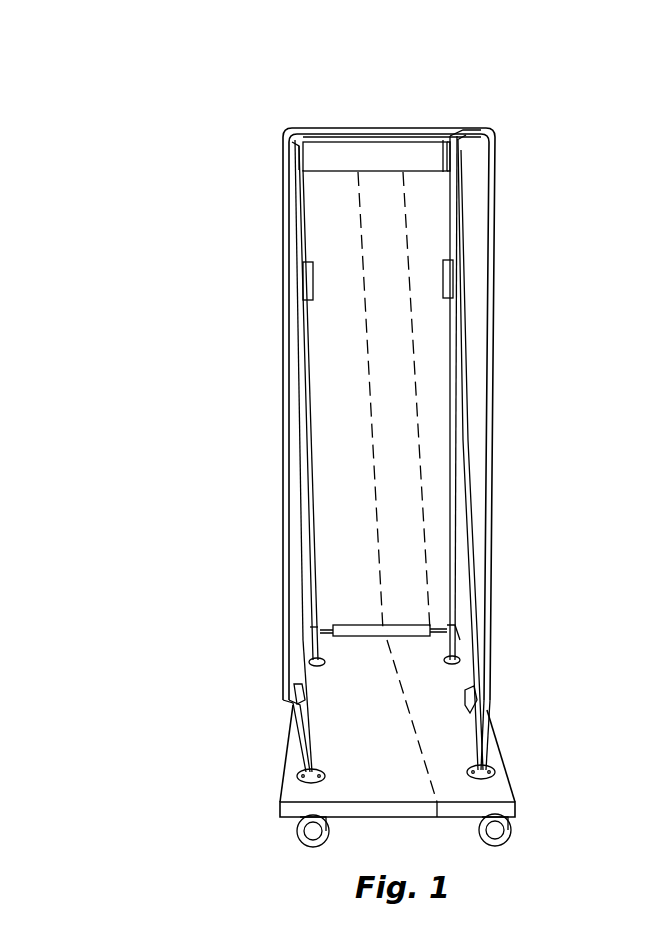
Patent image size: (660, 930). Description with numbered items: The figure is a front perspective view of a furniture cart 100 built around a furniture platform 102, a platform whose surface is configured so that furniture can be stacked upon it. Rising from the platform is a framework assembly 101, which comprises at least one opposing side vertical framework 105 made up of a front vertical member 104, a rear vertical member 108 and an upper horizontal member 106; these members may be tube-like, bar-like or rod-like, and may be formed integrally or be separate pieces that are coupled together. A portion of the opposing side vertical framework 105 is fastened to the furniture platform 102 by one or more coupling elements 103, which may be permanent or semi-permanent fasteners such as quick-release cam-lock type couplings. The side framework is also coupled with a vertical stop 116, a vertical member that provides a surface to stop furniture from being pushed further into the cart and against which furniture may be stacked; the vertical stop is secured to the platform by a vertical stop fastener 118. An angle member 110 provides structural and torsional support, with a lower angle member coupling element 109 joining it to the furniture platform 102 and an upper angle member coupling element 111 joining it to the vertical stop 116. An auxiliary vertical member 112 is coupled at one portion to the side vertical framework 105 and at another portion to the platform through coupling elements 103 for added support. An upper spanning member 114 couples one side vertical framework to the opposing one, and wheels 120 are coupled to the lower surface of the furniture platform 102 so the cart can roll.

The furniture cart 100 is at (184, 164).
The framework assembly 101 is at (330, 100).
The furniture platform 102 is at (492, 747).
The coupling element 103 is at (497, 782).
The front vertical member 104 is at (484, 555).
The opposing side vertical framework 105 is at (514, 194).
The upper horizontal member 106 is at (467, 133).
The rear vertical member 108 is at (445, 150).
The lower angle member coupling element 109 is at (468, 712).
The angle member 110 is at (468, 458).
The upper angle member coupling element 111 is at (452, 272).
The auxiliary vertical member 112 is at (450, 610).
The upper spanning member 114 is at (353, 140).
The vertical stop 116 is at (347, 202).
The vertical stop fastener 118 is at (355, 632).
The wheel 120 is at (502, 841).